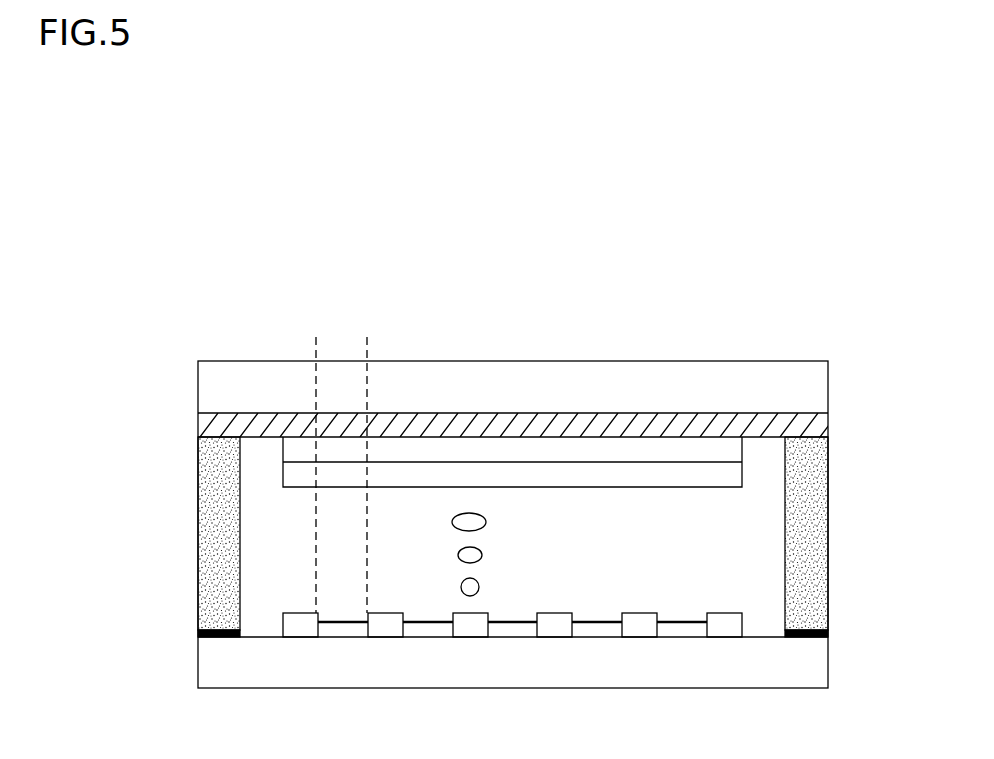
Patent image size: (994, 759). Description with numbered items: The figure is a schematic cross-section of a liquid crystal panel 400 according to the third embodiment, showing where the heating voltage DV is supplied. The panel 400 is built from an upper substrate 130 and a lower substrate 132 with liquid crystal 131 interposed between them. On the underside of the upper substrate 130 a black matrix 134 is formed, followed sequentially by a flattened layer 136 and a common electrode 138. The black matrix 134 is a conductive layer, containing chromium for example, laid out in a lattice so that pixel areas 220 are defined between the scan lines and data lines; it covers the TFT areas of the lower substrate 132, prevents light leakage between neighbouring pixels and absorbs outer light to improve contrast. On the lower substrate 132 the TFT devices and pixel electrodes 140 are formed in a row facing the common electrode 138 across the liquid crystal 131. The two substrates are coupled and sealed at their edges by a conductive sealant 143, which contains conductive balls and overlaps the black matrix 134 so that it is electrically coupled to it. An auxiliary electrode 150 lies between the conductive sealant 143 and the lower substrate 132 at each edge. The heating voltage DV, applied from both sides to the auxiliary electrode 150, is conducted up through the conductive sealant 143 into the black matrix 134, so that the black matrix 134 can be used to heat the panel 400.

The panel 400 is at (782, 352).
The upper substrate 130 is at (813, 388).
The black matrix 134 is at (810, 428).
The conductive sealant 143 is at (210, 477).
The auxiliary electrode 150 is at (203, 630).
The lower substrate 132 is at (818, 667).
The flattened layer 136 is at (558, 453).
The common electrode 138 is at (657, 472).
The liquid crystal 131 is at (483, 555).
The pixel electrodes 140 is at (347, 630).
The pixel area 220 is at (367, 344).
The thin film transistor TFT is at (300, 630).
The heating voltage DV is at (176, 628).